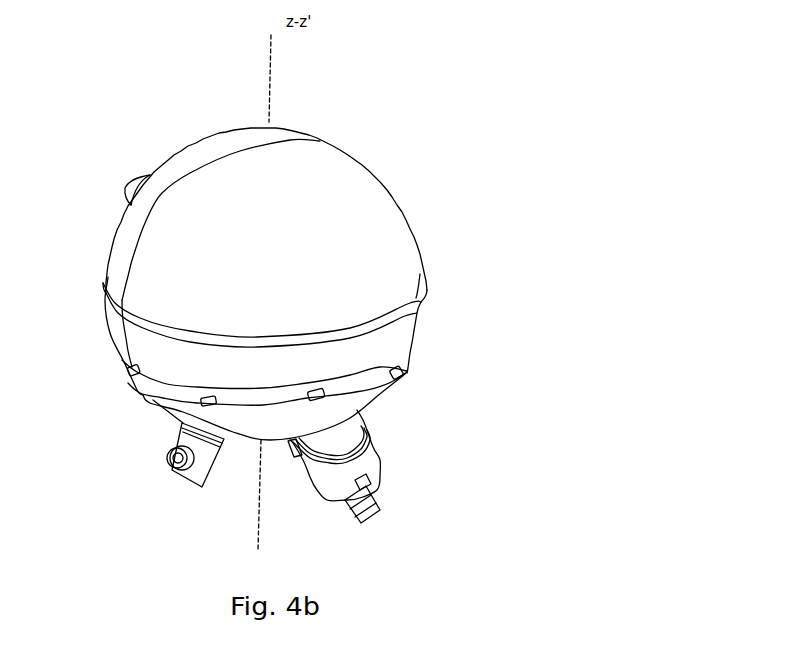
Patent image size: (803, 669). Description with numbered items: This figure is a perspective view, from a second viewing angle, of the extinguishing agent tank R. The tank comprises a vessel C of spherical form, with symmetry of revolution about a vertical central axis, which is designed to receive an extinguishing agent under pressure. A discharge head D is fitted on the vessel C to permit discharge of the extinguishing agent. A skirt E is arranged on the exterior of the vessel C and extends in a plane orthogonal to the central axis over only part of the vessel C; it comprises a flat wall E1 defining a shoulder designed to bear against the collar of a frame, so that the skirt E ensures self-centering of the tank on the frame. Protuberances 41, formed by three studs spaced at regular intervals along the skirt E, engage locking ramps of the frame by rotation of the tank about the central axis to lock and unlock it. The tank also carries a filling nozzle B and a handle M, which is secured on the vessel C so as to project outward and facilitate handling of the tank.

The extinguishing agent tank R is at (482, 254).
The vessel C is at (193, 197).
The handle M is at (125, 183).
The skirt E is at (155, 395).
The flat wall E1 is at (273, 414).
The protuberances 41 is at (402, 374).
The filling nozzle B is at (173, 473).
The discharge head D is at (373, 467).